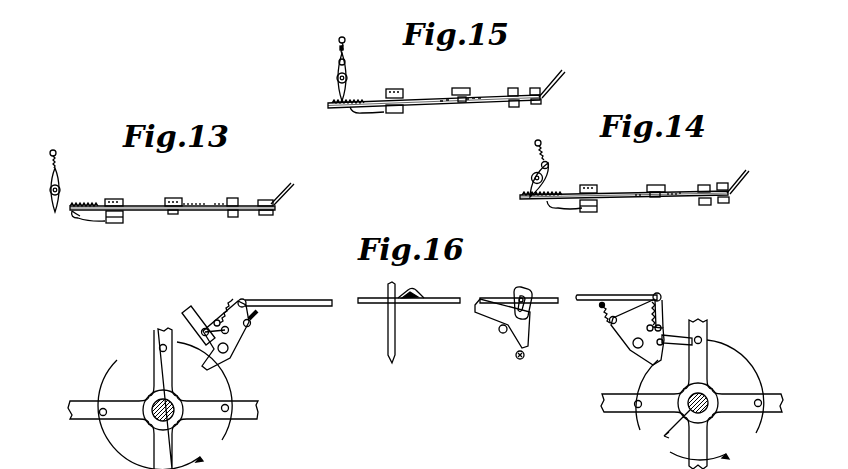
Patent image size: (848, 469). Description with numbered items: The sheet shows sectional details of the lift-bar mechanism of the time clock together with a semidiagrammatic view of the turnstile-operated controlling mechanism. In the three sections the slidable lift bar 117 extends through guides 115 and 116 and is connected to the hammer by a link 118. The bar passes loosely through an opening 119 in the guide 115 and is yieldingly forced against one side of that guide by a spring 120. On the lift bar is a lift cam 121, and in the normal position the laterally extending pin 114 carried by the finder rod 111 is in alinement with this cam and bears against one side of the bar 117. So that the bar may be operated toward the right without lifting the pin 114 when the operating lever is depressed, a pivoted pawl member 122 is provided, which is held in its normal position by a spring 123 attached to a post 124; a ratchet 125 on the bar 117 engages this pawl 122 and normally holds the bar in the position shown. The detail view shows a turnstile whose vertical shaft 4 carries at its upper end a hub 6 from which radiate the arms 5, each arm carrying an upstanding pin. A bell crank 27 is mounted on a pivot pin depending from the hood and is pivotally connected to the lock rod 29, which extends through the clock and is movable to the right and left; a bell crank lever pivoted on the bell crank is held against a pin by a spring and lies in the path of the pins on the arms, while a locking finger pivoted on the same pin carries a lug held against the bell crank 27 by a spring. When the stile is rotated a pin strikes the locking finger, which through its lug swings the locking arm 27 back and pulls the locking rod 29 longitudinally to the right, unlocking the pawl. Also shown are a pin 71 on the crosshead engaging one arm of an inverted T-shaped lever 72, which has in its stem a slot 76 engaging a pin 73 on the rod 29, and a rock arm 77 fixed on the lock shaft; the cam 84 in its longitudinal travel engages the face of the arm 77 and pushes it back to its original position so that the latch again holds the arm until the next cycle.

In FIG. 13, the finder rod 111 is at (173, 198).
In FIG. 15, the finder rod 111 is at (463, 90).
In FIG. 14, the finder rod 111 is at (655, 185).
In FIG. 13, the laterally extending pin 114 is at (175, 214).
In FIG. 15, the laterally extending pin 114 is at (459, 103).
In FIG. 14, the laterally extending pin 114 is at (657, 198).
In FIG. 13, the guide 115 is at (115, 199).
In FIG. 15, the guide 115 is at (398, 89).
In FIG. 14, the guide 115 is at (590, 185).
In FIG. 13, the guide 116 is at (232, 198).
In FIG. 15, the guide 116 is at (515, 88).
In FIG. 14, the guide 116 is at (703, 185).
In FIG. 13, the lift bar 117 is at (147, 206).
In FIG. 15, the lift bar 117 is at (433, 107).
In FIG. 14, the lift bar 117 is at (618, 194).
In FIG. 13, the link 118 is at (287, 189).
In FIG. 15, the link 118 is at (564, 76).
In FIG. 14, the link 118 is at (740, 177).
In FIG. 13, the opening 119 is at (123, 218).
In FIG. 15, the opening 119 is at (403, 99).
In FIG. 14, the opening 119 is at (593, 204).
In FIG. 13, the spring 120 is at (97, 222).
In FIG. 15, the spring 120 is at (370, 114).
In FIG. 14, the spring 120 is at (577, 206).
In FIG. 13, the lift cam 121 is at (190, 205).
In FIG. 14, the lift cam 121 is at (645, 199).
In FIG. 13, the pivoted pawl member 122 is at (52, 187).
In FIG. 15, the pivoted pawl member 122 is at (337, 68).
In FIG. 14, the pivoted pawl member 122 is at (549, 175).
In FIG. 13, the spring 123 is at (57, 167).
In FIG. 15, the spring 123 is at (346, 48).
In FIG. 14, the spring 123 is at (546, 154).
In FIG. 13, the post 124 is at (56, 151).
In FIG. 15, the post 124 is at (339, 42).
In FIG. 14, the post 124 is at (535, 144).
In FIG. 13, the ratchet 125 is at (85, 205).
In FIG. 15, the ratchet 125 is at (328, 100).
In FIG. 14, the ratchet 125 is at (530, 193).
In FIG. 16, the vertical shaft 4 is at (157, 416).
In FIG. 16, the arms 5 is at (97, 402).
In FIG. 16, the hub 6 is at (751, 394).
In FIG. 16, the bell crank 27 is at (664, 308).
In FIG. 16, the lock rod 29 is at (600, 296).
In FIG. 16, the pin 71 is at (517, 360).
In FIG. 16, the inverted T-shaped lever 72 is at (487, 325).
In FIG. 16, the pin 73 is at (524, 292).
In FIG. 16, the slot 76 is at (515, 294).
In FIG. 16, the rock arm 77 is at (388, 333).
In FIG. 16, the cam 84 is at (423, 292).